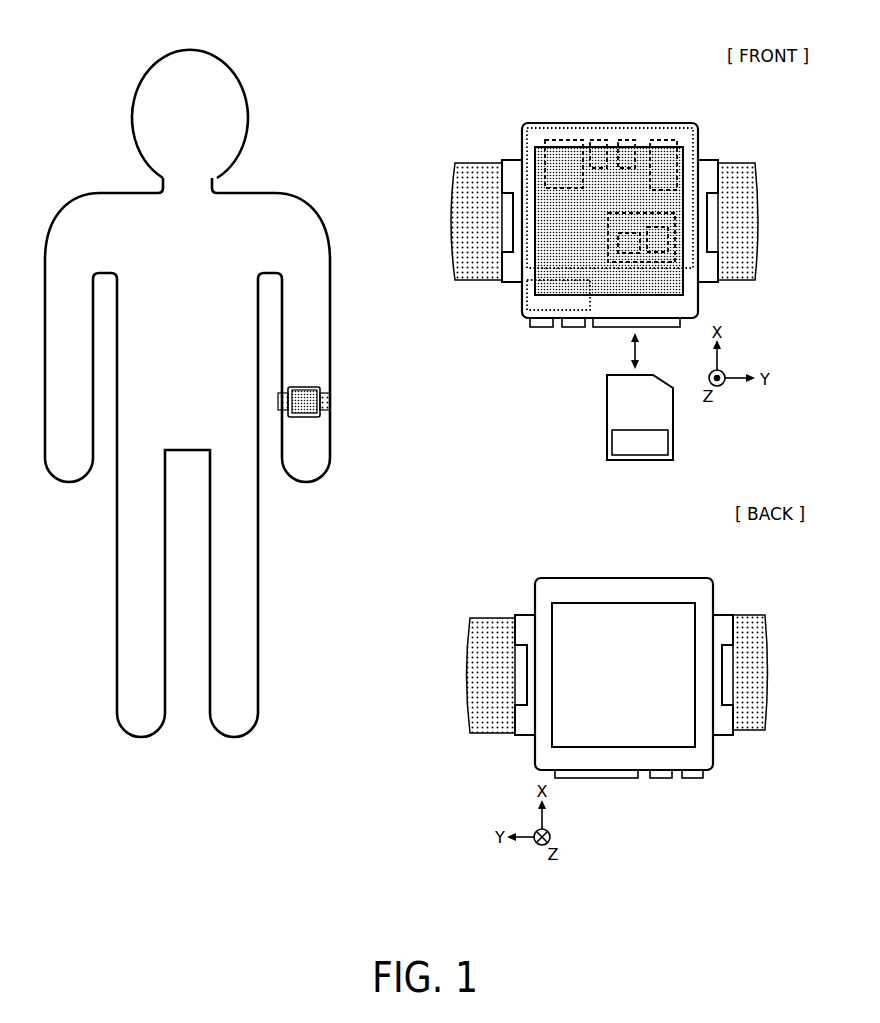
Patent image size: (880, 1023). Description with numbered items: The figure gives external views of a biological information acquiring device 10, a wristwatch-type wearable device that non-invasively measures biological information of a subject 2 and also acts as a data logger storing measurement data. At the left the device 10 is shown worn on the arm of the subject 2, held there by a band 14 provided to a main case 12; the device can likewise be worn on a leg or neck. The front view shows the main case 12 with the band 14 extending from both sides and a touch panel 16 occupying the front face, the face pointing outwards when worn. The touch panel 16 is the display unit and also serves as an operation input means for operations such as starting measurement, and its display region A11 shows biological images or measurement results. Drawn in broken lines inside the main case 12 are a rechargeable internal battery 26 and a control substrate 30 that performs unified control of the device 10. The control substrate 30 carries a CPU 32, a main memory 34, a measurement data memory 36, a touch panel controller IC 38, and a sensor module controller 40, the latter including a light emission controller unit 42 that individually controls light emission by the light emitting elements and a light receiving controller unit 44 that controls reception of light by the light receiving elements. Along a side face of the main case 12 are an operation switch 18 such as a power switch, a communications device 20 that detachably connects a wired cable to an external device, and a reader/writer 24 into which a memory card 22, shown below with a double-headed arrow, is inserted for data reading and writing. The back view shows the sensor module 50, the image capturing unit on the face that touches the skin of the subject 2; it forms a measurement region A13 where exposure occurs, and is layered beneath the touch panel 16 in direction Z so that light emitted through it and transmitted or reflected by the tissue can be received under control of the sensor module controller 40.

The subject 2 is at (147, 70).
The biological information acquiring device 10 is at (345, 389).
The main case 12 is at (520, 152).
The band 14 is at (472, 170).
The touch panel 16 is at (683, 287).
The operation switch 18 is at (573, 328).
The communications device 20 is at (540, 328).
The memory card 22 is at (620, 461).
The reader/writer 24 is at (612, 328).
The internal battery 26 is at (530, 302).
The control substrate 30 is at (533, 125).
The CPU 32 is at (563, 140).
The main memory 34 is at (597, 140).
The measurement data memory 36 is at (630, 140).
The touch panel controller IC 38 is at (668, 138).
The sensor module controller 40 is at (675, 222).
The light emission controller unit 42 is at (667, 243).
The light receiving controller unit 44 is at (623, 240).
The display region A11 is at (650, 290).
The sensor module 50 is at (620, 603).
The measurement region A13 is at (585, 622).